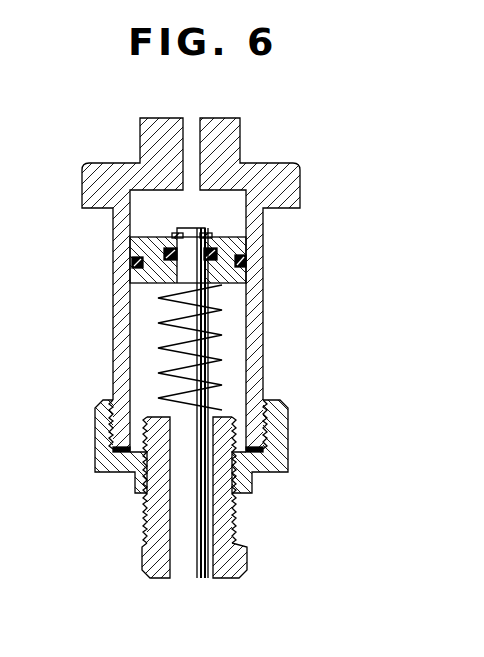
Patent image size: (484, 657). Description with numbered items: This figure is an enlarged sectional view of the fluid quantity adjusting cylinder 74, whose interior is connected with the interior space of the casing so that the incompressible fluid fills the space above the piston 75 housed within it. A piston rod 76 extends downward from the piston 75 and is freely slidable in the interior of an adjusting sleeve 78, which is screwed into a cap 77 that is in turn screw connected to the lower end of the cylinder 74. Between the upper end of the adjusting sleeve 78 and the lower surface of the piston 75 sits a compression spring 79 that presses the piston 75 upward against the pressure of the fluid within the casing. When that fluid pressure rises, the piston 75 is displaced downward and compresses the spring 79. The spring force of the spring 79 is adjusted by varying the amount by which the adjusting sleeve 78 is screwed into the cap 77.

The fluid quantity adjusting cylinder 74 is at (250, 290).
The piston 75 is at (234, 251).
The piston rod 76 is at (213, 325).
The cap 77 is at (278, 440).
The adjusting sleeve 78 is at (230, 500).
The compression spring 79 is at (167, 325).